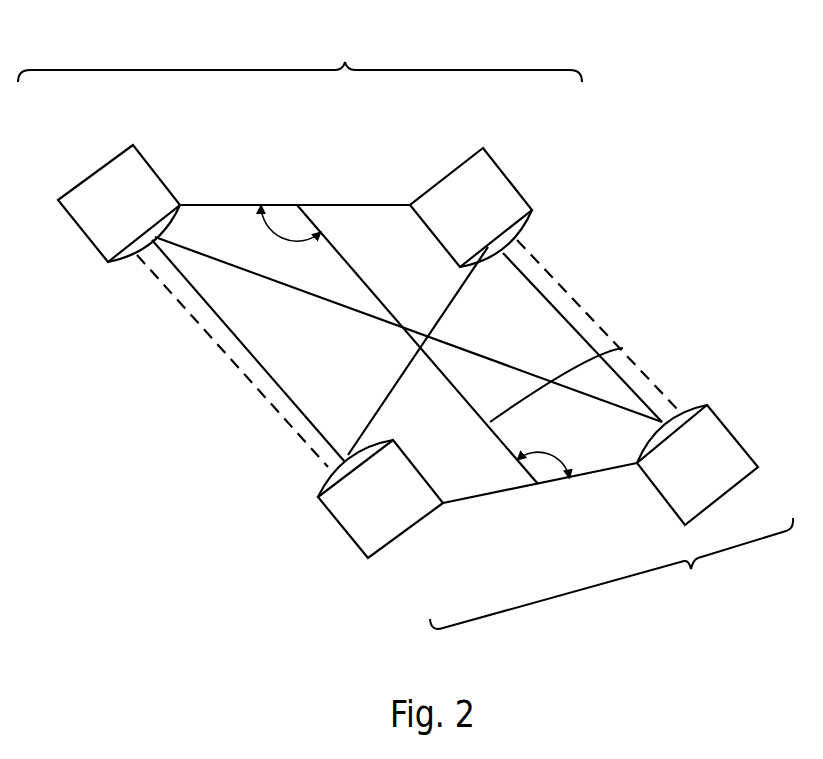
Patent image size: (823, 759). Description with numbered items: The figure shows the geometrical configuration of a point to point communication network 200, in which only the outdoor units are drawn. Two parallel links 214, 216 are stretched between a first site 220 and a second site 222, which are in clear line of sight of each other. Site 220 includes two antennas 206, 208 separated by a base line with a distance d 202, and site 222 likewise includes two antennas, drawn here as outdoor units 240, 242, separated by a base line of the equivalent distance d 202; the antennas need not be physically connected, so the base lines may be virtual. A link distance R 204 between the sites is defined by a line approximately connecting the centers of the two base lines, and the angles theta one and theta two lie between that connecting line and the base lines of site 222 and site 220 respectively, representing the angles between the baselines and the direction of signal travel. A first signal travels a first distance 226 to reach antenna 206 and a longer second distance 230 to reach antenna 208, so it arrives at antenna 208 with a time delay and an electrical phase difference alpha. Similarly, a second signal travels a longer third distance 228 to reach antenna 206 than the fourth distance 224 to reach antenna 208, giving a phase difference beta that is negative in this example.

The point to point communication network 200 is at (680, 189).
The distance d 202 is at (247, 203).
The link distance R 204 is at (626, 348).
The antenna 206 is at (113, 156).
The antenna 208 is at (469, 152).
The parallel link 214 is at (580, 298).
The parallel link 216 is at (268, 404).
The site 220 is at (300, 55).
The site 222 is at (611, 573).
The distance r22 224 is at (565, 320).
The distance r11 226 is at (266, 369).
The distance r21 228 is at (280, 283).
The distance r12 230 is at (457, 292).
The first receiving unit RXODU1 of second pair 240 is at (385, 546).
The second receiving unit RXODU2 of second pair 242 is at (740, 444).